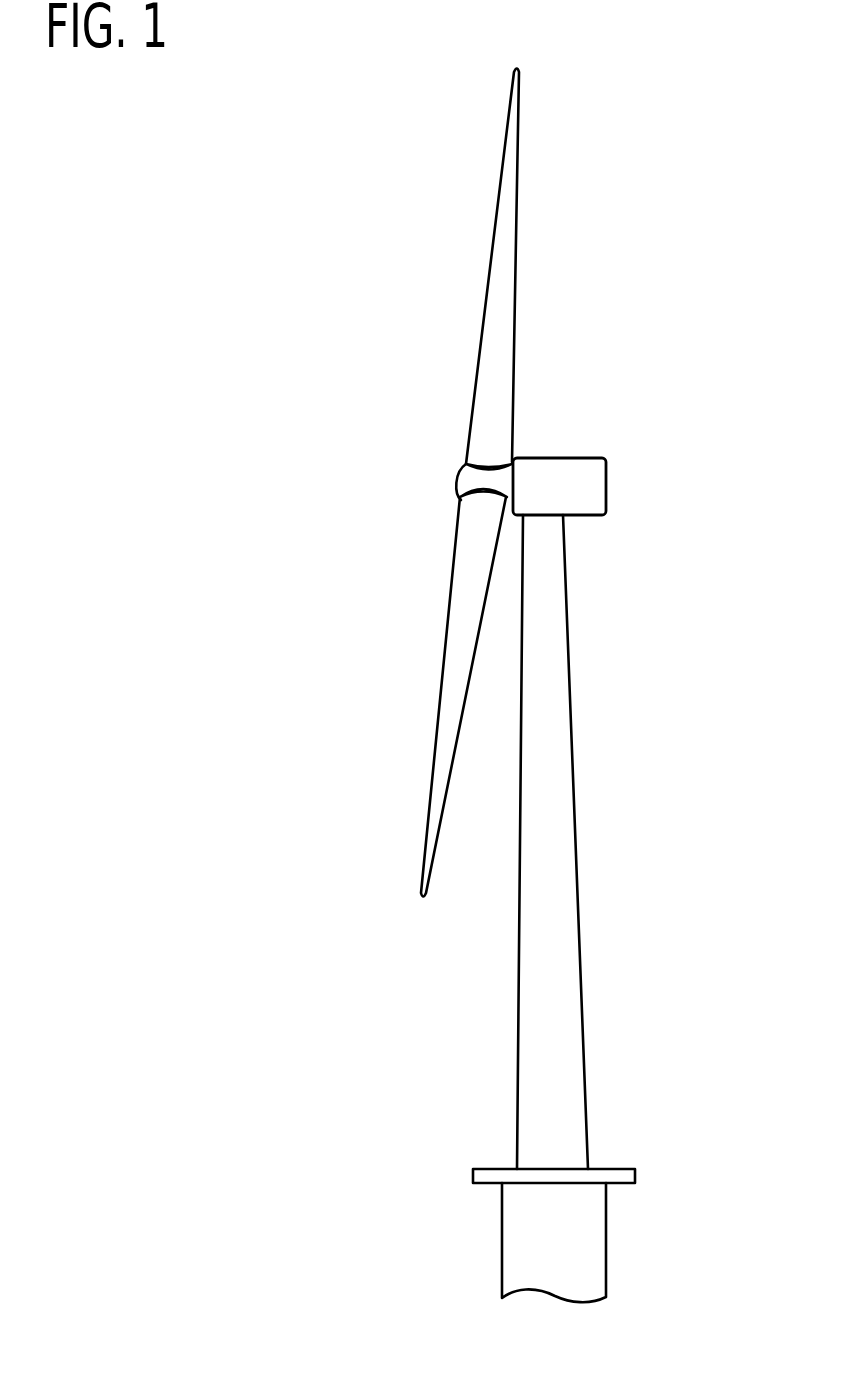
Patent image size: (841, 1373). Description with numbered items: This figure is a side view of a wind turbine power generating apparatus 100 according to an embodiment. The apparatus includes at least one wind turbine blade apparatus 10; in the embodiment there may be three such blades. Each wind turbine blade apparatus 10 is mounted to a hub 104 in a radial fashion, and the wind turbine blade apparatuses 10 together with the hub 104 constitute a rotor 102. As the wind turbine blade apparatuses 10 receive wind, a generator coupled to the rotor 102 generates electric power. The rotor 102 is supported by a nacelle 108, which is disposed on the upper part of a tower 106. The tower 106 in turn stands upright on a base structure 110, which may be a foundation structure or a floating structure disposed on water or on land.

The wind turbine power generating apparatus 100 is at (318, 247).
The rotor 102 is at (402, 420).
The wind turbine blade apparatus 10 is at (493, 223).
The hub 104 is at (458, 478).
The tower 106 is at (575, 833).
The nacelle 108 is at (607, 484).
The base structure 110 is at (606, 1236).